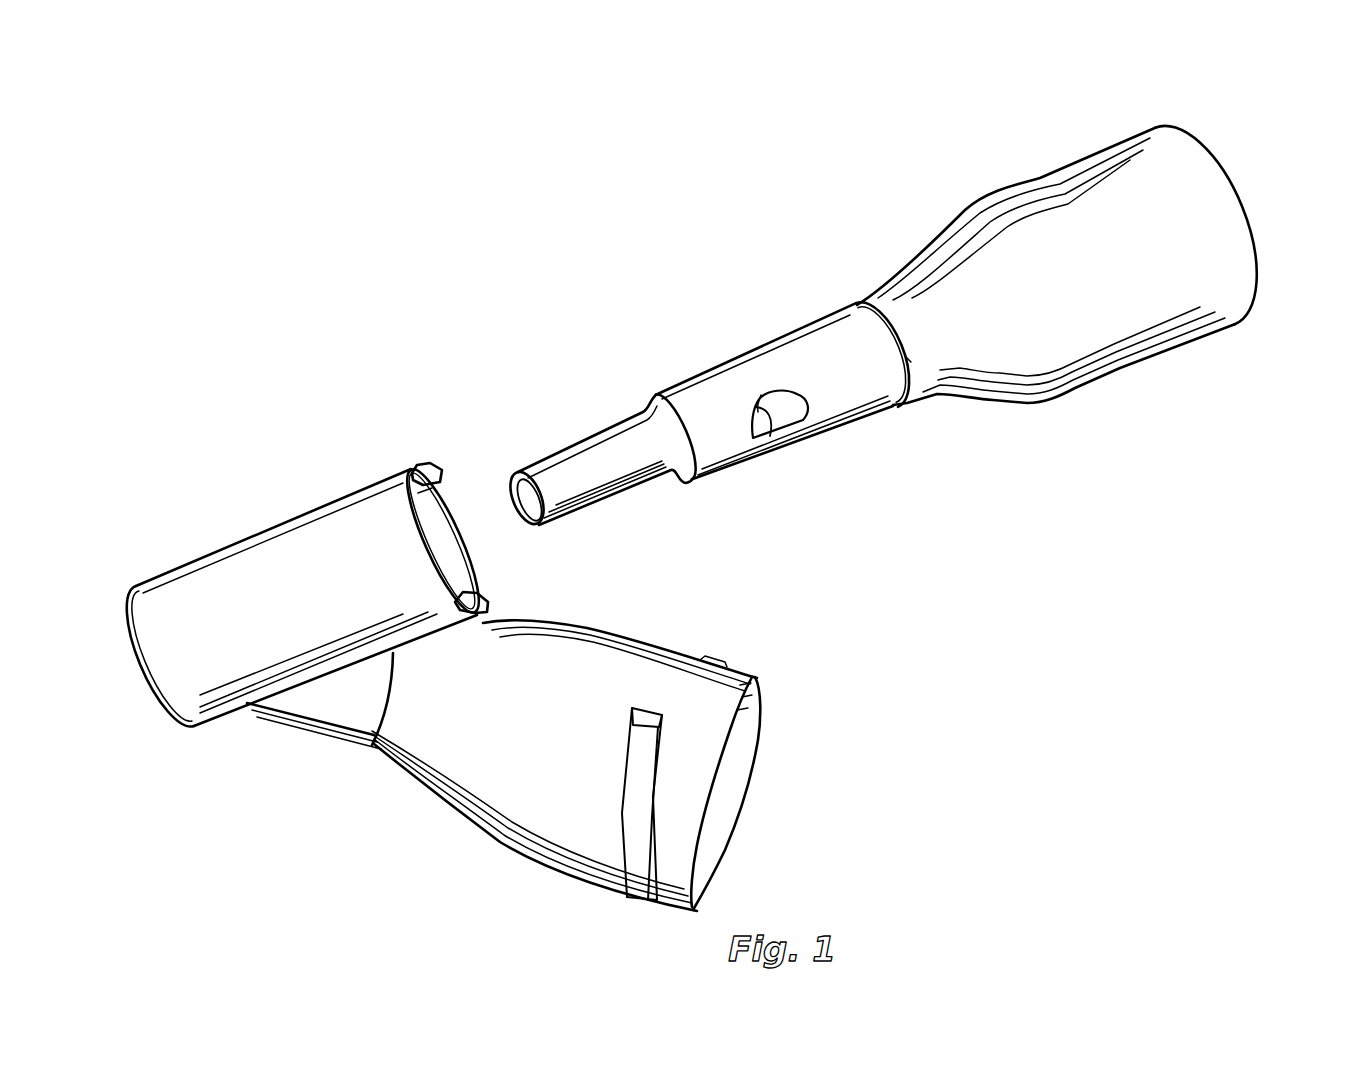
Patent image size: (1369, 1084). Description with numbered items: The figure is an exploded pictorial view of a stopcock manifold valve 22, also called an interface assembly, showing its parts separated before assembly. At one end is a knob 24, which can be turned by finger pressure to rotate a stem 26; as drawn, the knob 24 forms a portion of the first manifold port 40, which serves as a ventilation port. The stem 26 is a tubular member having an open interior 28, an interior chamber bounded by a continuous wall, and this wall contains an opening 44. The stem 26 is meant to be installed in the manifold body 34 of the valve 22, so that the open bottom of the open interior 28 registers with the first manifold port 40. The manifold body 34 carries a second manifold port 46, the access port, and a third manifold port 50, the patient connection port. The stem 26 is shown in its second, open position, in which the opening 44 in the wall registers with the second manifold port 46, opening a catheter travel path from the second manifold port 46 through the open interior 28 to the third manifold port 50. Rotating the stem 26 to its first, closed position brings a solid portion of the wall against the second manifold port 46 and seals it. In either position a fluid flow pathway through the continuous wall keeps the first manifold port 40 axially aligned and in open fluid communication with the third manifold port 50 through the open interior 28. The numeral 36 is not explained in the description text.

The stopcock manifold valve 22 is at (353, 350).
The knob 24 is at (940, 230).
The stem 26 is at (690, 378).
The open interior 28 is at (753, 441).
The manifold body 34 is at (242, 541).
The nozzle tip 36 is at (511, 477).
The first manifold port 40 is at (1248, 208).
The opening 44 is at (788, 418).
The second manifold port 46 is at (728, 778).
The third manifold port 50 is at (524, 518).